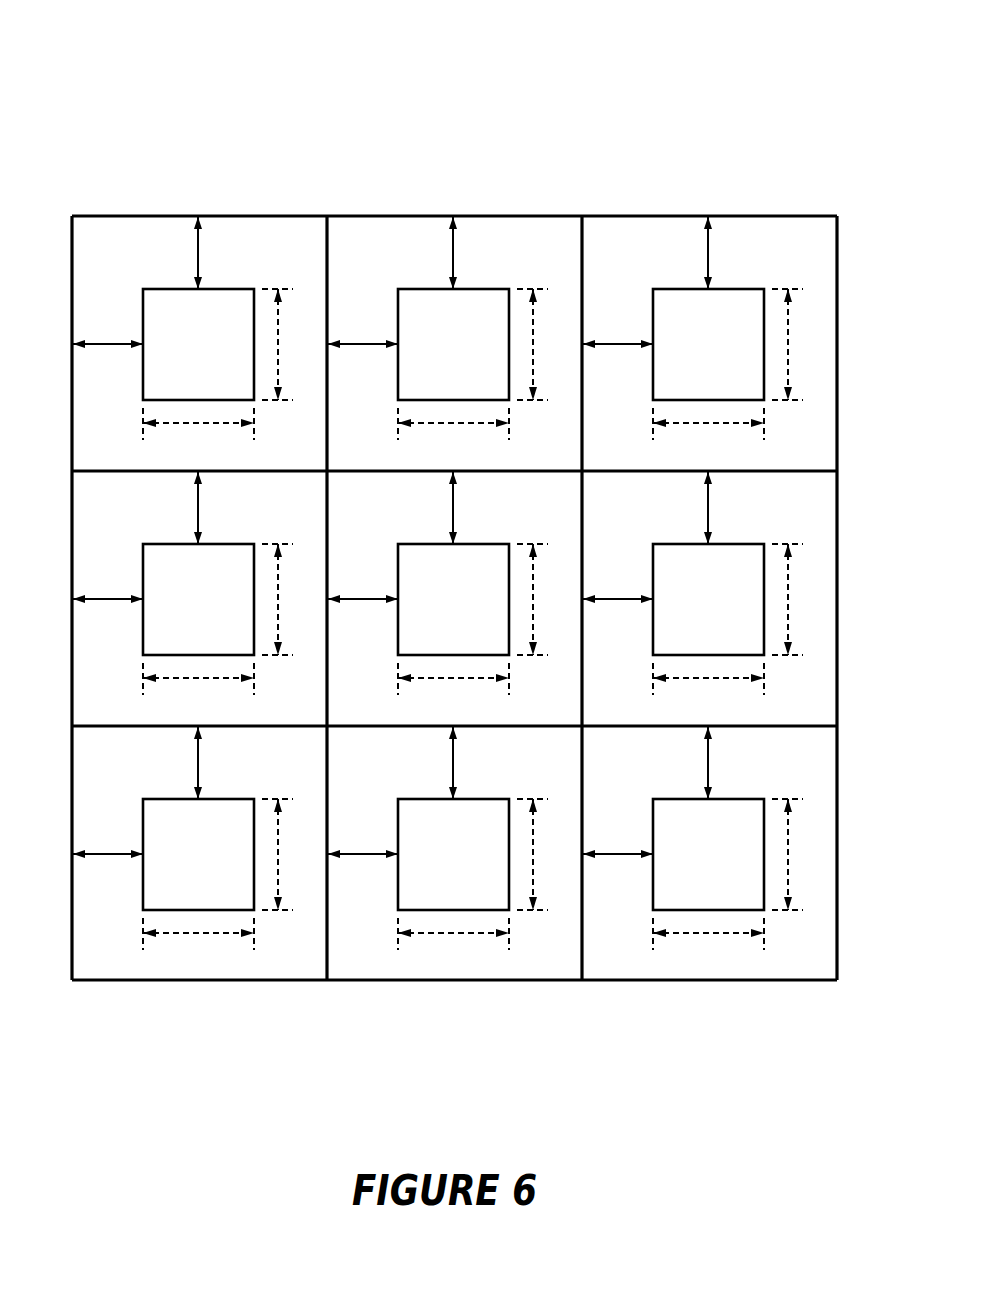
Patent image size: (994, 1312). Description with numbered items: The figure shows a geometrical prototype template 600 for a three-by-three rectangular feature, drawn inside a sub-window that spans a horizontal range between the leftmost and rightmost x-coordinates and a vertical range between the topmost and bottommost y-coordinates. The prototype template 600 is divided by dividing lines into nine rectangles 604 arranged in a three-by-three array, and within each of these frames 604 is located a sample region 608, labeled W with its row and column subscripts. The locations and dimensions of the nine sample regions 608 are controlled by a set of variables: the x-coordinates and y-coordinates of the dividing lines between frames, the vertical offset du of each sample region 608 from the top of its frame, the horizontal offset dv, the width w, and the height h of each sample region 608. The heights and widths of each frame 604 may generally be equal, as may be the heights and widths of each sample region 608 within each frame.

The geometrical prototype template 600 is at (476, 160).
The rectangle frame 604 is at (141, 268).
The sample region 608 is at (229, 308).